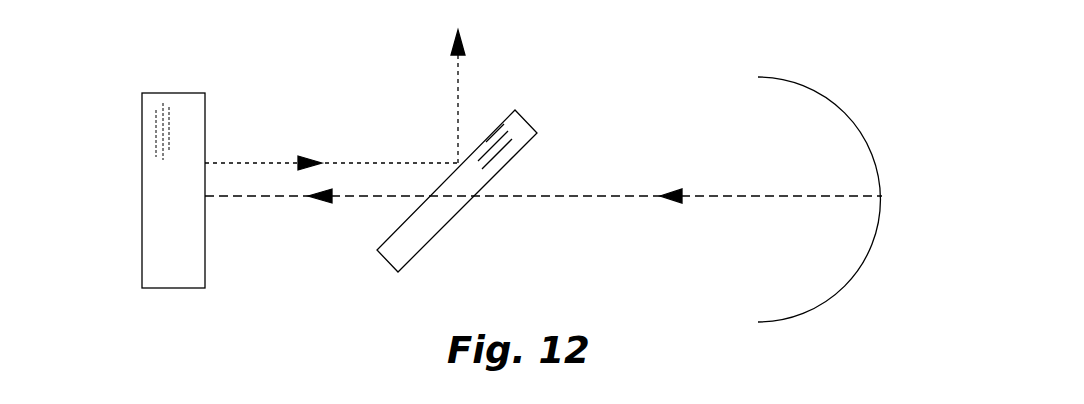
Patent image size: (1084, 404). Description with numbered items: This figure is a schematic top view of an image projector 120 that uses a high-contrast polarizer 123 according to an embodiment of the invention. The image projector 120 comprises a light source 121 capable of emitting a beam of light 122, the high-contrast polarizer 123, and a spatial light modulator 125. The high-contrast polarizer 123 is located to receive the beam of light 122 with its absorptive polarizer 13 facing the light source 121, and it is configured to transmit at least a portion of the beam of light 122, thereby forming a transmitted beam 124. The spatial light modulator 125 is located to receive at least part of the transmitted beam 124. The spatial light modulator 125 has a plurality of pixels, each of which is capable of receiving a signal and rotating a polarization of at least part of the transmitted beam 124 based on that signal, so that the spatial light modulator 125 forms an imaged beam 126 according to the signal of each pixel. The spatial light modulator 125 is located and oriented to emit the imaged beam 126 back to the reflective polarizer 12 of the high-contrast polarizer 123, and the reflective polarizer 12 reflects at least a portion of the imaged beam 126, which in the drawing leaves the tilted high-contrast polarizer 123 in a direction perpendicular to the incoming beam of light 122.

The image projector 120 is at (155, 52).
The light source 121 is at (780, 75).
The beam of light 122 is at (717, 193).
The high-contrast polarizer 123 is at (400, 247).
The transmitted beam 124 is at (243, 200).
The spatial light modulator 125 is at (193, 200).
The imaged beam 126 is at (255, 162).
The reflective polarizer 12 is at (495, 127).
The absorptive polarizer 13 is at (530, 145).